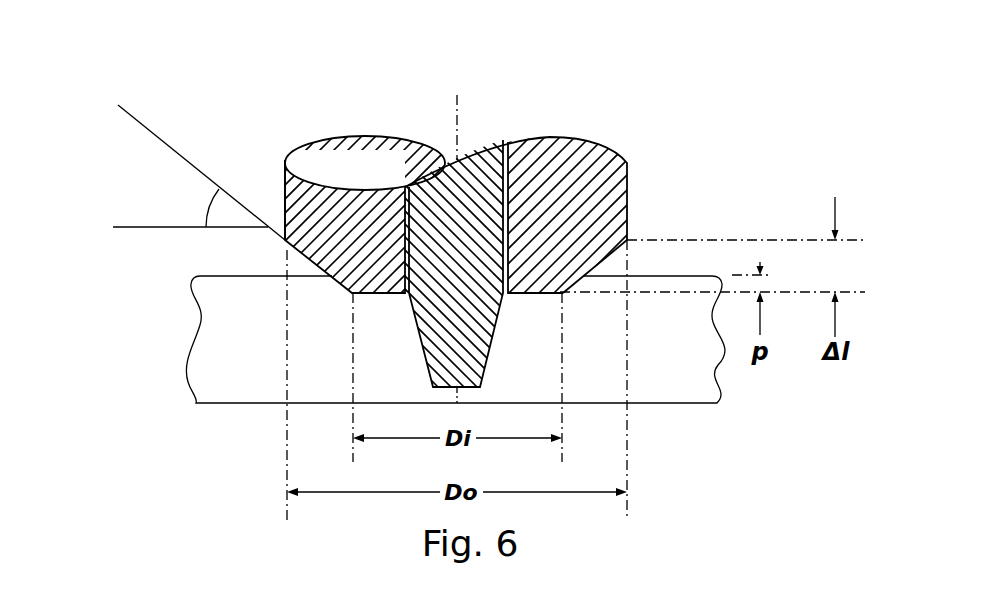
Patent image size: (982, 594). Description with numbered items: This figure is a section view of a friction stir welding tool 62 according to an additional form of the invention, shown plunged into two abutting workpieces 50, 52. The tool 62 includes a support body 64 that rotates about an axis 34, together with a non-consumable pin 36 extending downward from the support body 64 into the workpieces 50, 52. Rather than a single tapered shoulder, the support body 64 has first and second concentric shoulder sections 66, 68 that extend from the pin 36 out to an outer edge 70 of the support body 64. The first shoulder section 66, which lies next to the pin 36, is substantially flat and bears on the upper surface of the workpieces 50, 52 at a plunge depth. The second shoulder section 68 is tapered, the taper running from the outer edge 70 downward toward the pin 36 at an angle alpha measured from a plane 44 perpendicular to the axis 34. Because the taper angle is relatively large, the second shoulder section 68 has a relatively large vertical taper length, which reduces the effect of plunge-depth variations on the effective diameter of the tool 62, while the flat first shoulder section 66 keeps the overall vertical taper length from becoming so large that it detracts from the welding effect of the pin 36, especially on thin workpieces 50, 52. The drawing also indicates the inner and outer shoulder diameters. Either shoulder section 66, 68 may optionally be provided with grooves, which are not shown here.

The axis 34 is at (458, 110).
The non-consumable pin 36 is at (430, 185).
The plane 44 is at (140, 228).
The workpiece 50 is at (246, 390).
The workpiece 52 is at (688, 388).
The friction stir welding tool 62 is at (473, 233).
The support body 64 is at (596, 150).
The first shoulder section 66 is at (522, 304).
The second shoulder section 68 is at (618, 258).
The outer edge 70 is at (276, 180).